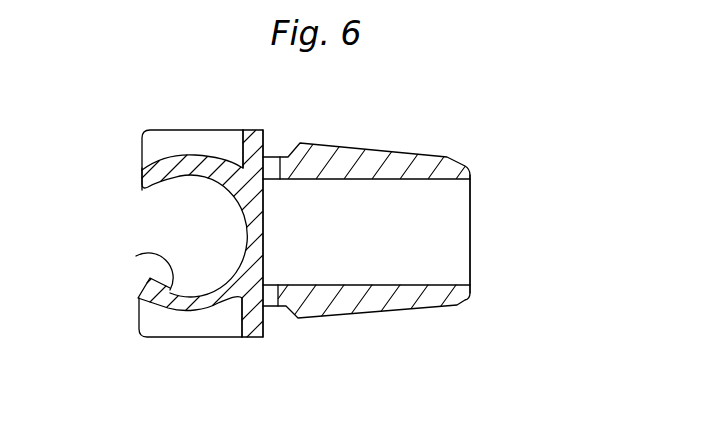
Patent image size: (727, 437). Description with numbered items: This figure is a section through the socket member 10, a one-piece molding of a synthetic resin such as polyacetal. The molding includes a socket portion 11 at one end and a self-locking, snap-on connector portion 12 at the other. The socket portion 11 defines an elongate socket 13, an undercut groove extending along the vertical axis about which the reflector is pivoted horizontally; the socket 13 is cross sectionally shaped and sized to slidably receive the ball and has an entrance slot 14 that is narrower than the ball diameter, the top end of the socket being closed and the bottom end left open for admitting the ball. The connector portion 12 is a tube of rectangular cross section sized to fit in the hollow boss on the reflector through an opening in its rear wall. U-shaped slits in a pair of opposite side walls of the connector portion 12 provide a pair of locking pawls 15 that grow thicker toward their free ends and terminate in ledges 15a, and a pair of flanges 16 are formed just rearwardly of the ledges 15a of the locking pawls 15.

The socket member 10 is at (432, 158).
The socket portion 11 is at (173, 309).
The self-locking, snap-on connector portion 12 is at (462, 302).
The elongate socket 13 is at (136, 256).
The entrance slot 14 is at (142, 190).
The locking pawls 15 is at (368, 150).
The ledges 15a is at (290, 153).
The flanges 16 is at (249, 131).